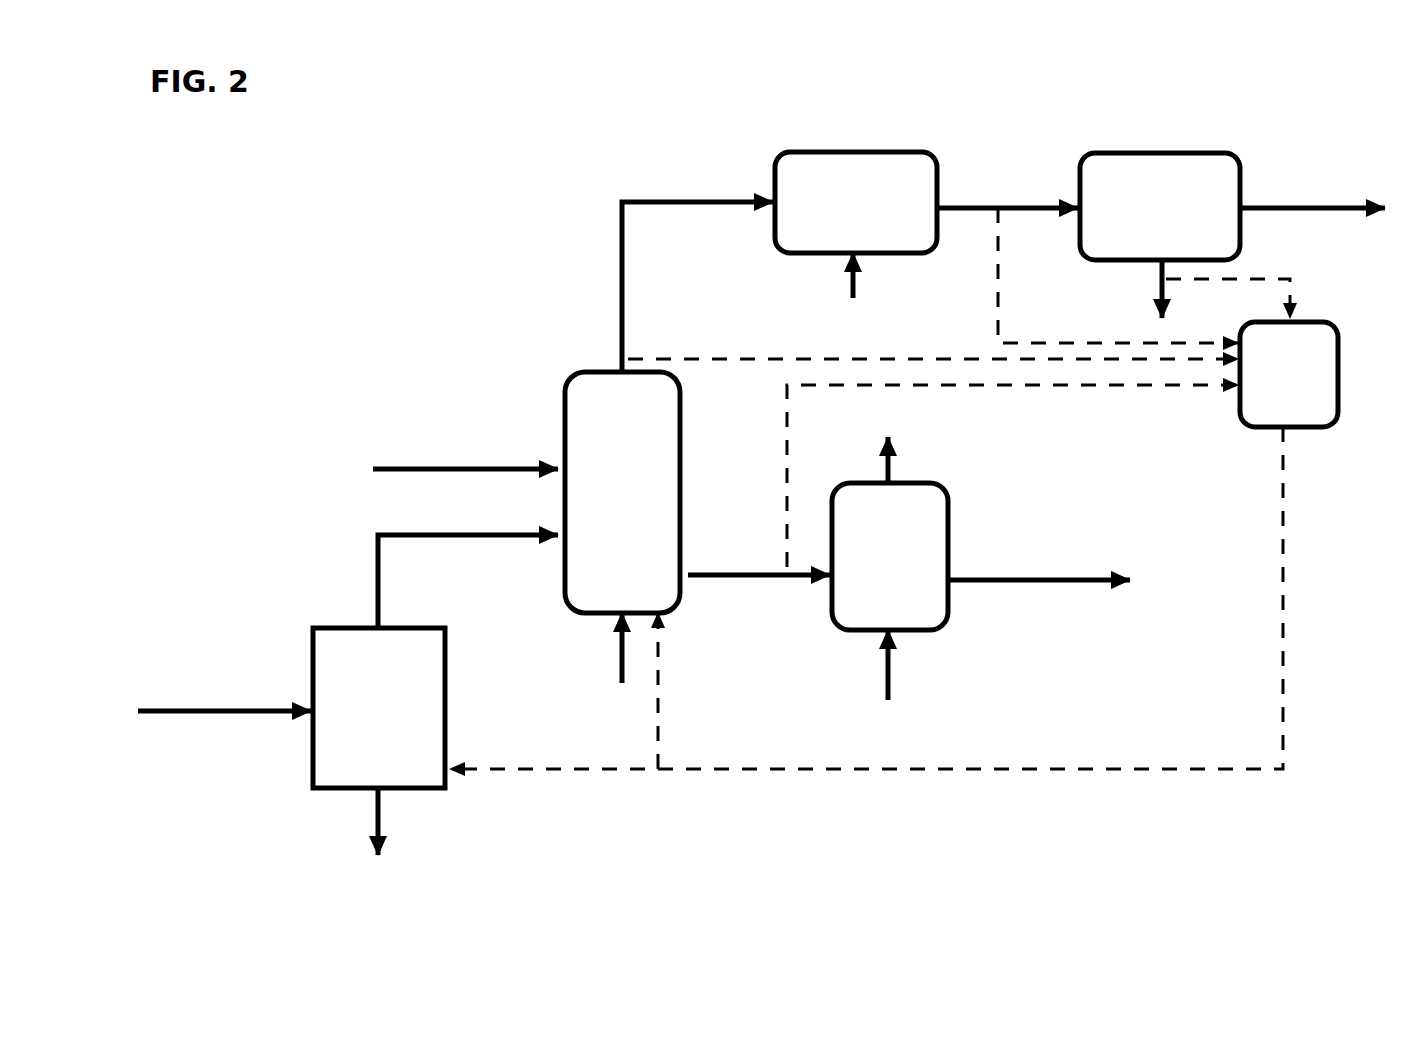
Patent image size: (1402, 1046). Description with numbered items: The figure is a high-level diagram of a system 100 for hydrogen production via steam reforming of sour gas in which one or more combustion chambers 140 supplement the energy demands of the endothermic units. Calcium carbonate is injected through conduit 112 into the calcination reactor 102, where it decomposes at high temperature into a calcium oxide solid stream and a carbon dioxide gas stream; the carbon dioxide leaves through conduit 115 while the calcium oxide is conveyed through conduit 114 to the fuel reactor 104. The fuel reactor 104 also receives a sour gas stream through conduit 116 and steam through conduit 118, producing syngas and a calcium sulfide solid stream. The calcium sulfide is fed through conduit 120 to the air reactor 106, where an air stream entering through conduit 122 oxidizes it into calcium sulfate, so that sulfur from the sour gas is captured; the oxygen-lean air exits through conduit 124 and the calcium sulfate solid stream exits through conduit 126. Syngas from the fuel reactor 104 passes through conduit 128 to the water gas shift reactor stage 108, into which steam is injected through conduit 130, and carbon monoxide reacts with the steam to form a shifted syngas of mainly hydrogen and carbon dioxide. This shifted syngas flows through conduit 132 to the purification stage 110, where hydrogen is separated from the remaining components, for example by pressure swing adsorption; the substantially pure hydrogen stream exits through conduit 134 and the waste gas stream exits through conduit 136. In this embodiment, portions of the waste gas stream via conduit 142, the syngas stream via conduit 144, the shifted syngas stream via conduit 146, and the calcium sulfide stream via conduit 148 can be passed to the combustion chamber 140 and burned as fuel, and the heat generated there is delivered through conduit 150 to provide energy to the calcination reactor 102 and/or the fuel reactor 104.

The system 100 is at (362, 196).
The calcination reactor 102 is at (445, 684).
The fuel reactor 104 is at (680, 432).
The air reactor 106 is at (944, 612).
The water gas shift reactor stage 108 is at (850, 152).
The purification stage 110 is at (1140, 153).
The conduit 112 is at (220, 706).
The conduit 114 is at (372, 565).
The conduit 115 is at (382, 820).
The conduit 116 is at (440, 465).
The conduit 118 is at (620, 657).
The conduit 120 is at (722, 576).
The conduit 122 is at (893, 676).
The conduit 124 is at (895, 468).
The conduit 126 is at (1055, 578).
The conduit 128 is at (617, 260).
The conduit 130 is at (848, 288).
The conduit 132 is at (958, 200).
The conduit 134 is at (1273, 206).
The conduit 136 is at (1155, 263).
The combustion chamber 140 is at (1337, 378).
The conduit 142 is at (1295, 286).
The conduit 144 is at (960, 357).
The conduit 146 is at (997, 250).
The conduit 148 is at (789, 420).
The conduit 150 is at (785, 770).